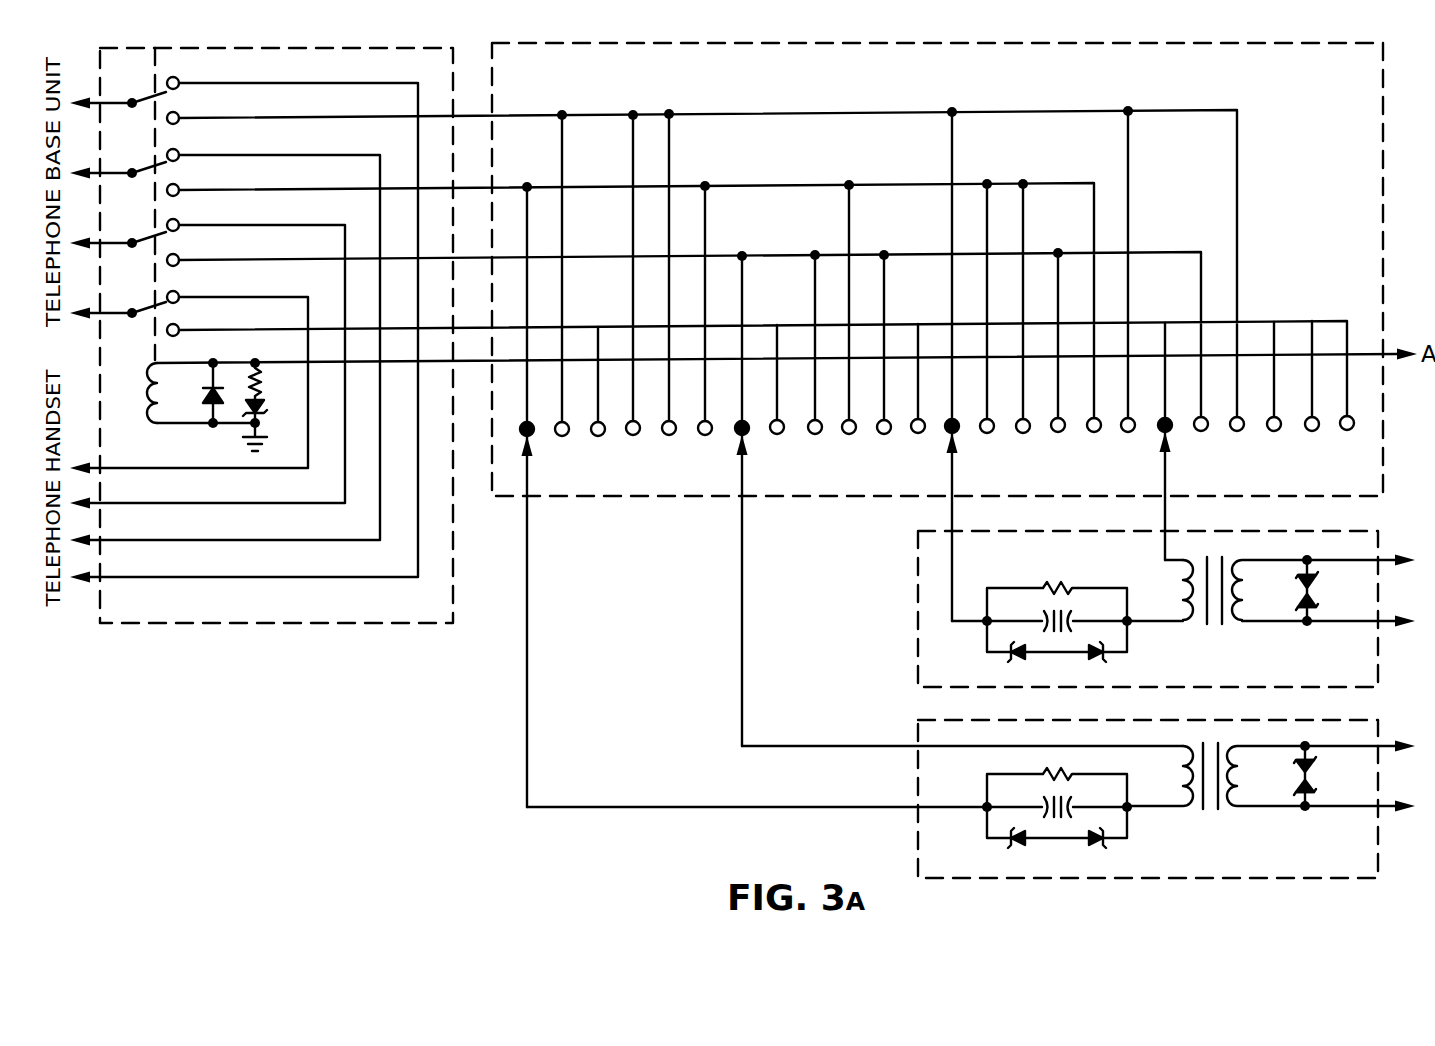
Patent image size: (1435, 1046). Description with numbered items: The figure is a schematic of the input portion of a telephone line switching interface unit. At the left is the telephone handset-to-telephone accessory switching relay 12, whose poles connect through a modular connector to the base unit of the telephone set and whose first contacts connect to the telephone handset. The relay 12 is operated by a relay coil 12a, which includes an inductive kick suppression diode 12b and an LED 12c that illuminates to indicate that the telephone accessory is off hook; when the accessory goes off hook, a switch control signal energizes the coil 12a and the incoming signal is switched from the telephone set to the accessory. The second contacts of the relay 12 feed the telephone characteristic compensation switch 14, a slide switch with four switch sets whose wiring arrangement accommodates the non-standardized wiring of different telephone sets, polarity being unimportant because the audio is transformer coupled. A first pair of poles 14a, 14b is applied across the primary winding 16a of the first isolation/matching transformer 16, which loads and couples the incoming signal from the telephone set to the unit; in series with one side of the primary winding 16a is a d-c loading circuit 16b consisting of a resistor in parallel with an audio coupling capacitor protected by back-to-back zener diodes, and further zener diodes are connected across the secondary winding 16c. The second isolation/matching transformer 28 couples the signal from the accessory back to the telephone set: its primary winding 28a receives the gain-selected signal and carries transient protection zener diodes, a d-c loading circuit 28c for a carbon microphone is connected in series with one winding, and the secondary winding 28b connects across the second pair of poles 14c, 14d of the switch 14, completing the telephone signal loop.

The telephone handset-to-telephone accessory switching relay 12 is at (261, 335).
The relay coil 12a is at (143, 405).
The inductive kick suppression diode 12b is at (208, 403).
The LED 12c is at (273, 403).
The telephone characteristic compensation switch 14 is at (937, 425).
The pole 14a is at (555, 614).
The pole 14b is at (771, 583).
The pole 14c is at (978, 520).
The pole 14d is at (1193, 489).
The first isolation/matching transformer 16 is at (1176, 799).
The primary winding 16a is at (1178, 777).
The d-c loading circuit 16b is at (980, 817).
The secondary winding 16c is at (1250, 777).
The second isolation/matching transformer 28 is at (1176, 609).
The primary winding 28a is at (1252, 590).
The secondary winding 28b is at (1176, 592).
The d-c loading circuit 28c is at (978, 633).